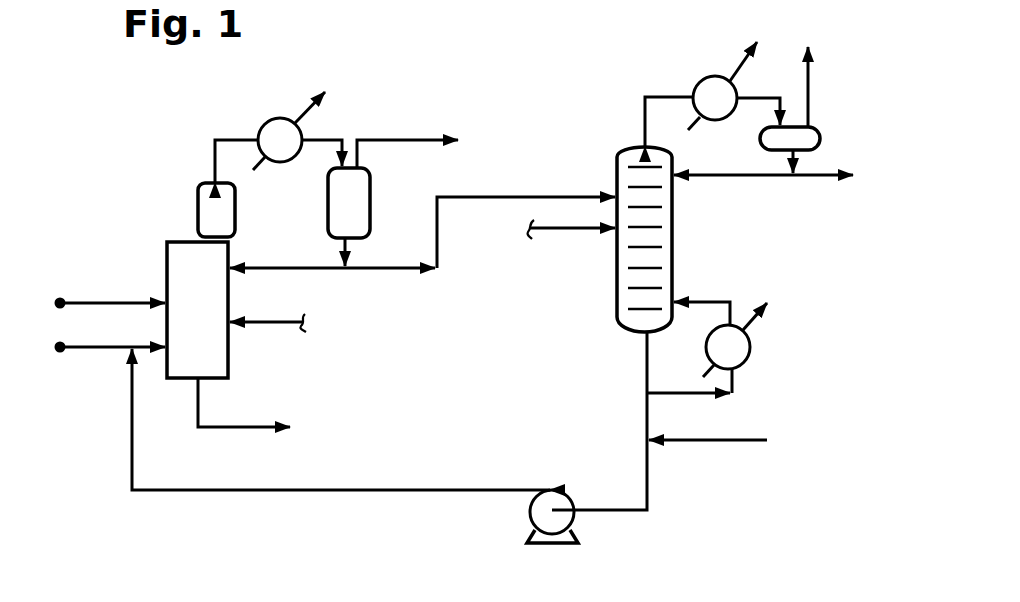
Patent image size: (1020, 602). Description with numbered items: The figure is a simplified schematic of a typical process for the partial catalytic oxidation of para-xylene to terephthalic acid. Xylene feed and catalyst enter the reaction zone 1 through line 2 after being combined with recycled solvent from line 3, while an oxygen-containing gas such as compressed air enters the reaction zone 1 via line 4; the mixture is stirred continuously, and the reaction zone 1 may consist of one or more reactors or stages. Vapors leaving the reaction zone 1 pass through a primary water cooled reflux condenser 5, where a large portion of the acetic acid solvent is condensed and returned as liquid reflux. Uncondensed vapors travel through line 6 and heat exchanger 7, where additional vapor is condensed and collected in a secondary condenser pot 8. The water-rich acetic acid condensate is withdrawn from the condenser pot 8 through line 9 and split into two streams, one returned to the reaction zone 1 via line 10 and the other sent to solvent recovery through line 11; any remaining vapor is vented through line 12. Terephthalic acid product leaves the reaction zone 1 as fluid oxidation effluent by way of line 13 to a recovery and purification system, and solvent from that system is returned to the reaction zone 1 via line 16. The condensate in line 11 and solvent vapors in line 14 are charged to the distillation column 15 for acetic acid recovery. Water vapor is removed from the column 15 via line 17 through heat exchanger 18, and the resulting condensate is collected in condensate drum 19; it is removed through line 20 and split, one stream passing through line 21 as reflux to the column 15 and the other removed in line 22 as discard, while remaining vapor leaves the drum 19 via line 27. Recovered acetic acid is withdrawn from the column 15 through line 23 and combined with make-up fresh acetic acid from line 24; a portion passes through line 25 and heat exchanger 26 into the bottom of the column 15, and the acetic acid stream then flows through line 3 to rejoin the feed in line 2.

The reaction zone 1 is at (224, 347).
The line 2 is at (108, 346).
The line 3 is at (131, 458).
The line 4 is at (130, 302).
The primary water cooled reflux condenser 5 is at (198, 212).
The line 6 is at (212, 168).
The heat exchanger 7 is at (268, 122).
The secondary condenser pot 8 is at (363, 198).
The line 9 is at (347, 250).
The line 10 is at (287, 268).
The line 11 is at (440, 247).
The line 12 is at (413, 139).
The line 13 is at (203, 404).
The line 14 is at (562, 230).
The distillation column 15 is at (674, 250).
The line 16 is at (283, 321).
The line 17 is at (642, 126).
The heat exchanger 18 is at (703, 70).
The condensate drum 19 is at (823, 136).
The line 20 is at (795, 153).
The line 21 is at (717, 177).
The line 22 is at (815, 178).
The line 23 is at (644, 415).
The line 24 is at (720, 442).
The line 25 is at (681, 395).
The heat exchanger 26 is at (748, 363).
The line 27 is at (813, 90).